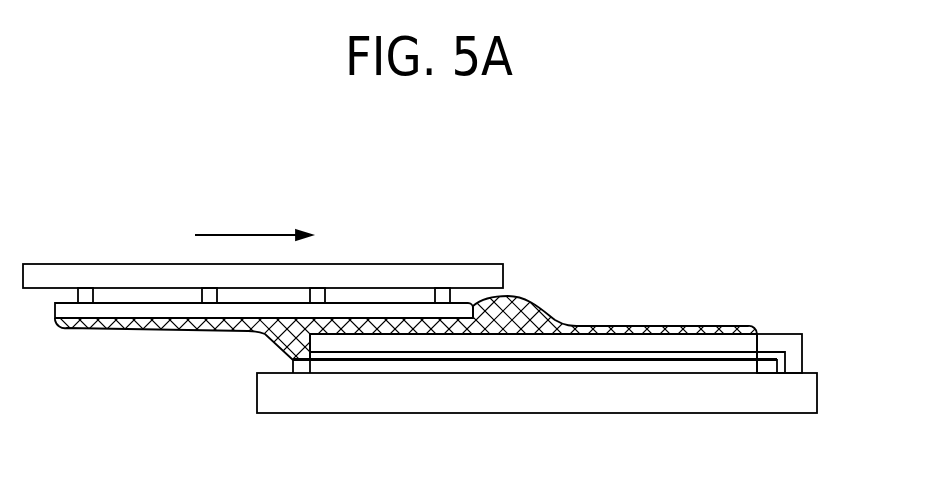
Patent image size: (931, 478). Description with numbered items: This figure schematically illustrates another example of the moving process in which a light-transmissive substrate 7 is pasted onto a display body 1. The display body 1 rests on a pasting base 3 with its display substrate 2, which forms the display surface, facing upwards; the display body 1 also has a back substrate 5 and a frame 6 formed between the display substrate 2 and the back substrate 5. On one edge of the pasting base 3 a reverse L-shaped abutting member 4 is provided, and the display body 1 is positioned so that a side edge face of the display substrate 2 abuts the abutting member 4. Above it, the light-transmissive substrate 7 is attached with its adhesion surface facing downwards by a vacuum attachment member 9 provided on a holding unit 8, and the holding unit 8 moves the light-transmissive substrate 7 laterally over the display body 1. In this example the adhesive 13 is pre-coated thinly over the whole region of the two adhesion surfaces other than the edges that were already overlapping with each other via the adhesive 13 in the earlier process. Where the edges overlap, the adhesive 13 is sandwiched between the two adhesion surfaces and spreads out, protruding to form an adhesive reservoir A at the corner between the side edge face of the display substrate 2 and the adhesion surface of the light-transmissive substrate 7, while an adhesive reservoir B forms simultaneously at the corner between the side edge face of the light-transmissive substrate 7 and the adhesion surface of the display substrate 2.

The display body 1 is at (537, 375).
The display substrate 2 is at (717, 342).
The pasting base 3 is at (618, 405).
The abutting member 4 is at (788, 342).
The back substrate 5 is at (743, 367).
The frame 6 is at (700, 363).
The light-transmissive substrate 7 is at (157, 311).
The holding unit 8 is at (131, 263).
The vacuum attachment member 9 is at (83, 292).
The adhesive 13 is at (107, 329).
The adhesive reservoir A is at (513, 300).
The adhesive reservoir B is at (268, 340).